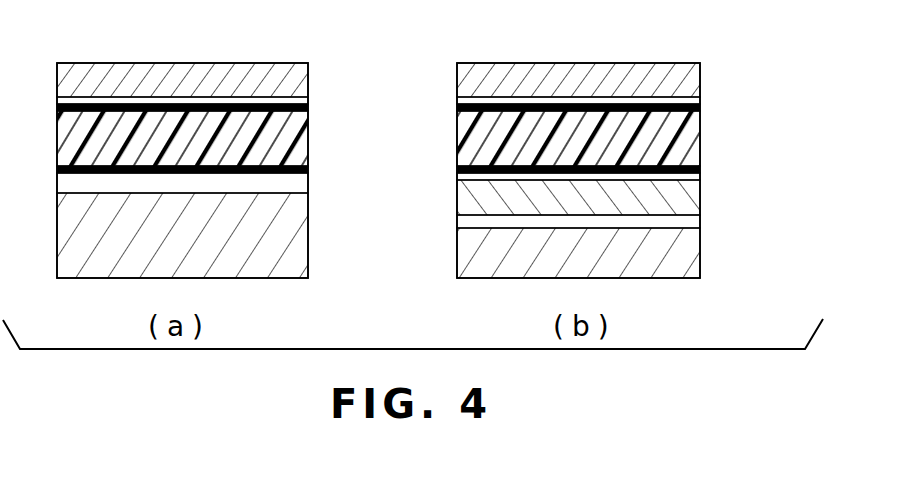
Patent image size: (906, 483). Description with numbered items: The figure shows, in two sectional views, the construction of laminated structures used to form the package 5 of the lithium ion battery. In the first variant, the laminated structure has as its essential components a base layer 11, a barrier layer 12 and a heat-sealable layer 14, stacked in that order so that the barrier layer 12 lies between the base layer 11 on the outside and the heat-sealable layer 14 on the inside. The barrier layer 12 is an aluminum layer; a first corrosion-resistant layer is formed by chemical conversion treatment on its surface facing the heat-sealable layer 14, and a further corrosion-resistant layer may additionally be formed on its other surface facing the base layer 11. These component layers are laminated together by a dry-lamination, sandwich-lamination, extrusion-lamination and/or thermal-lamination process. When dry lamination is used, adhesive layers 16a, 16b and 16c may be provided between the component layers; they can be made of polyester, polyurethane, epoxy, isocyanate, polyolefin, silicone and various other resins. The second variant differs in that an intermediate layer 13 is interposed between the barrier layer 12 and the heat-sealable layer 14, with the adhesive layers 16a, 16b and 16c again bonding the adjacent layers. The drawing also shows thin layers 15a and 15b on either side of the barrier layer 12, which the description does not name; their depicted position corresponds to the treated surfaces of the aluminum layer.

The package 5 is at (316, 283).
The base layer 11 is at (302, 70).
The barrier layer 12 is at (302, 133).
The intermediate layer 13 is at (693, 203).
The heat-sealable layer 14 is at (302, 247).
The lower black absorbing layer 15a is at (308, 170).
The upper black absorbing layer 15b is at (308, 107).
The adhesive layer 16a is at (302, 182).
The adhesive layer 16b is at (308, 100).
The adhesive layer 16c is at (693, 223).